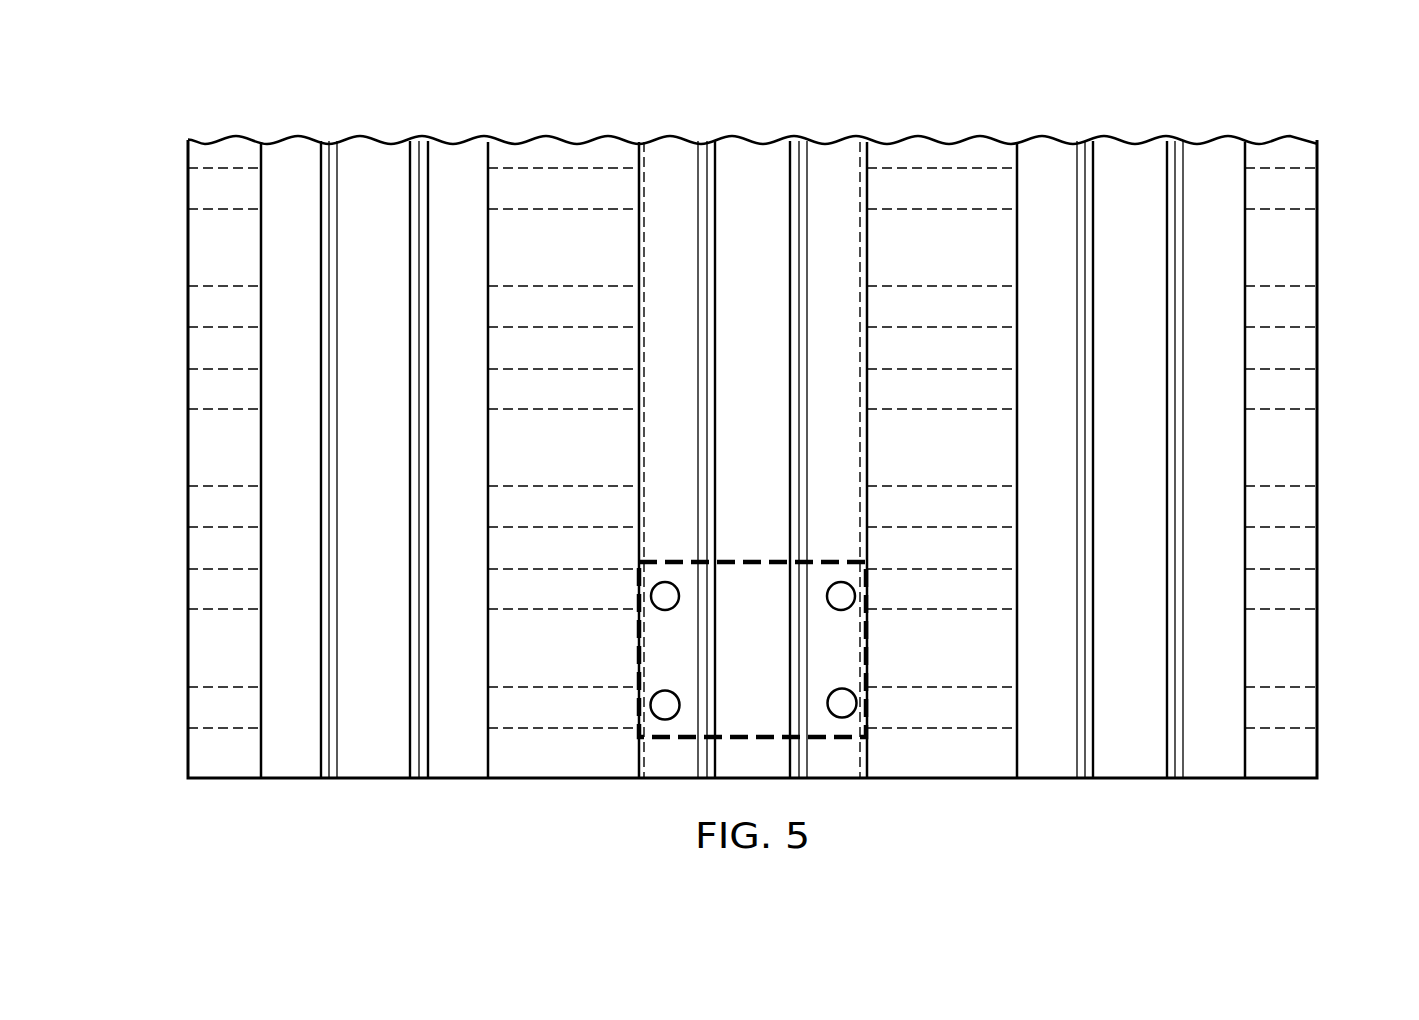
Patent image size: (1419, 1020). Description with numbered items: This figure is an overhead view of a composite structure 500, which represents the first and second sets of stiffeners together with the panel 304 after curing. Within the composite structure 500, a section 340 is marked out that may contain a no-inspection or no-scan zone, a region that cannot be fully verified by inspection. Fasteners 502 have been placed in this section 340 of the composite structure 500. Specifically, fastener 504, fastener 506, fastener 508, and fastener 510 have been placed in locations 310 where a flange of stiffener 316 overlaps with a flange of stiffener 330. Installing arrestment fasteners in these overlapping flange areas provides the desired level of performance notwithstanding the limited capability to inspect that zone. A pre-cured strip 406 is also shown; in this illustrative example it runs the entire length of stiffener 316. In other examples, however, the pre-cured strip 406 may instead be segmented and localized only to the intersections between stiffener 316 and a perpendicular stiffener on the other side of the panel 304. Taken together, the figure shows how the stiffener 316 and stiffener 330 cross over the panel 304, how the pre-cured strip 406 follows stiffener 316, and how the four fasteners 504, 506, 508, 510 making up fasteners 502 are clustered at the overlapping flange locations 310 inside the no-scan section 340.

The composite structure 500 is at (751, 431).
The panel 304 is at (751, 491).
The pre-cured strip 406 is at (643, 463).
The section 340 is at (752, 560).
The locations 310 is at (753, 609).
The fastener 504 is at (680, 598).
The fastener 506 is at (827, 595).
The fastener 508 is at (680, 700).
The fastener 510 is at (827, 703).
The fasteners 502 is at (868, 580).
The stiffener 316 is at (637, 757).
The stiffener 330 is at (1287, 732).